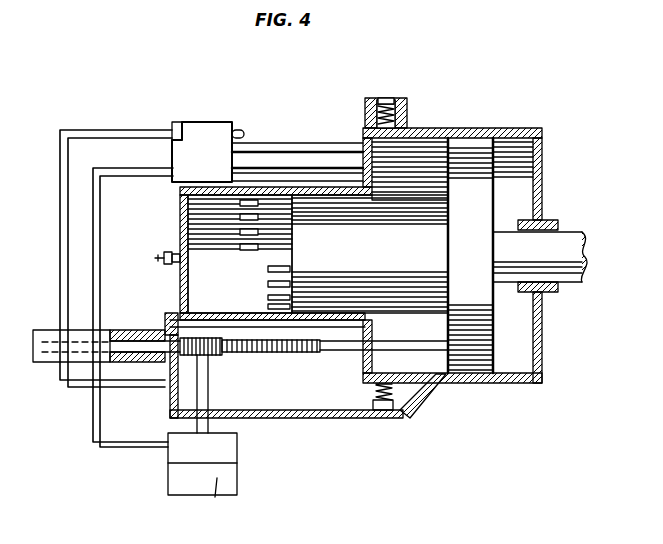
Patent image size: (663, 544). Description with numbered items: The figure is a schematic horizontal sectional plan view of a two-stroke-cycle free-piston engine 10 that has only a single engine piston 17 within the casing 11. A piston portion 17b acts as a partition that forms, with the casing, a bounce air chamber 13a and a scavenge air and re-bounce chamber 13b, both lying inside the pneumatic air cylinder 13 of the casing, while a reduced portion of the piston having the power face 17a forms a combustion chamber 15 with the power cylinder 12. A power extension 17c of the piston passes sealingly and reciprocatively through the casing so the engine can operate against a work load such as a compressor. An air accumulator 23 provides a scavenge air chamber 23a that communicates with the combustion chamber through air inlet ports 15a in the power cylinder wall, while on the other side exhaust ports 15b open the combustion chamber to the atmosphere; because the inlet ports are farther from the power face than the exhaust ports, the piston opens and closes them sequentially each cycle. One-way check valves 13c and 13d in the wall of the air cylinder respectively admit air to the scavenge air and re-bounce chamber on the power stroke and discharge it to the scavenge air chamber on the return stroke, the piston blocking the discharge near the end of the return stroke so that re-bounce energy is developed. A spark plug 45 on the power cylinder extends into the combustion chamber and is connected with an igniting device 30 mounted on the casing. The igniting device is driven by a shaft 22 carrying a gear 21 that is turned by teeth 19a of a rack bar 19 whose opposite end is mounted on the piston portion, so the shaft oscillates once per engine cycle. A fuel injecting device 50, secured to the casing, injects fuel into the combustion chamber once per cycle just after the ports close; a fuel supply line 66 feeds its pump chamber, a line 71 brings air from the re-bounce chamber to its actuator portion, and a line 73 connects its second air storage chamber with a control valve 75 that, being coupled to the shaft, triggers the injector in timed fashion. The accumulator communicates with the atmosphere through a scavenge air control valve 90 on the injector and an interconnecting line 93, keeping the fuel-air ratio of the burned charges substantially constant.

The two-stroke-cycle free-piston engine 10 is at (540, 390).
The casing 11 is at (530, 124).
The power cylinder 12 is at (315, 185).
The pneumatic air cylinder 13 is at (478, 383).
The bounce air chamber 13a is at (565, 133).
The scavenge air and re-bounce chamber 13b is at (418, 150).
The one-way check valve 13c is at (384, 104).
The one-way check valve 13d is at (392, 393).
The combustion chamber 15 is at (236, 291).
The air inlet ports 15a is at (292, 280).
The exhaust ports 15b is at (260, 251).
The engine piston 17 is at (413, 267).
The power face 17a is at (304, 258).
The piston portion 17b is at (473, 145).
The power extension 17c is at (557, 245).
The rack bar 19 is at (338, 352).
The teeth 19a is at (257, 354).
The gear 21 is at (218, 357).
The shaft 22 is at (200, 392).
The air accumulator 23 is at (333, 418).
The scavenge air chamber 23a is at (250, 412).
The igniting device 30 is at (208, 500).
The spark plug 45 is at (160, 250).
The fuel injecting device 50 is at (207, 122).
The fuel supply line 66 is at (292, 170).
The line 71 is at (285, 143).
The line 73 is at (98, 318).
The control valve 75 is at (185, 462).
The scavenge air control valve 90 is at (183, 108).
The interconnecting line 93 is at (58, 206).